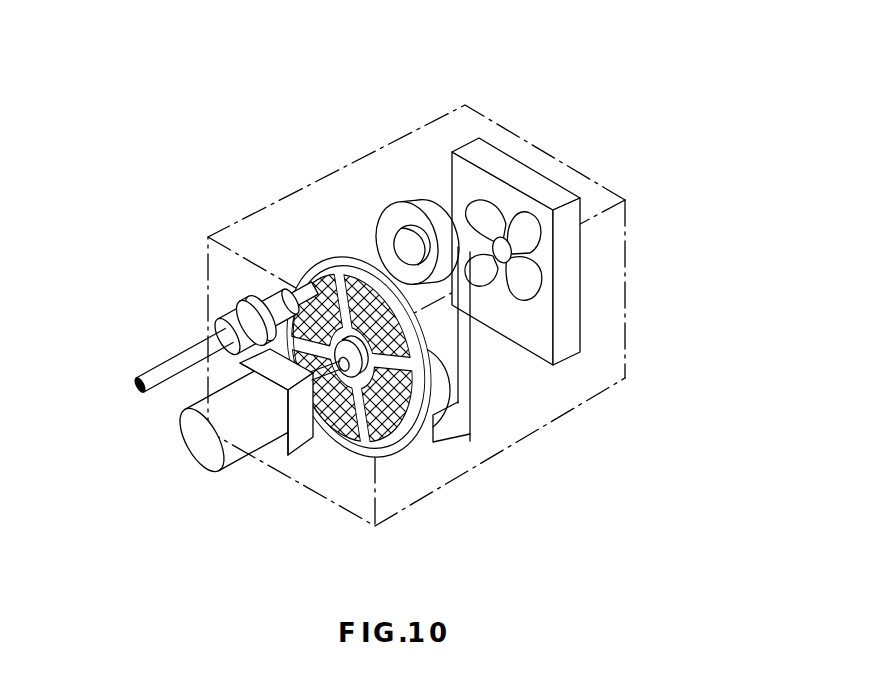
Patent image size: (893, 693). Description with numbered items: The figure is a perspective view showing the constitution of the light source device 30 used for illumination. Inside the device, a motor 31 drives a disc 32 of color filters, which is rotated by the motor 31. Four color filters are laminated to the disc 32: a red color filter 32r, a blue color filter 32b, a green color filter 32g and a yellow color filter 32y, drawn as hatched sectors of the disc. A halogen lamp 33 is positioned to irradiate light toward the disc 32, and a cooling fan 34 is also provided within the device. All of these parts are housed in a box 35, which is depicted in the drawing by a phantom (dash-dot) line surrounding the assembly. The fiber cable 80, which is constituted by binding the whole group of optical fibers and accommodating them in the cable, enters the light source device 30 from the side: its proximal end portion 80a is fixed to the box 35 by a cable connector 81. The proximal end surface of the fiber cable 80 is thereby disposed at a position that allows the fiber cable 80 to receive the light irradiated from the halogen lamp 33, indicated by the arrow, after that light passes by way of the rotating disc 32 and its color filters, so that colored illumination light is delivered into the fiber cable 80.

The light source device 30 is at (546, 136).
The motor 31 is at (193, 455).
The disc of color filters 32 is at (416, 349).
The red color filter 32r is at (453, 385).
The green color filter 32g is at (327, 447).
The blue color filter 32b is at (358, 440).
The yellow color filter 32y is at (315, 275).
The halogen lamp 33 is at (383, 210).
The cooling fan 34 is at (527, 322).
The box 35 is at (627, 322).
The fiber cable 80 is at (163, 360).
The proximal end portion 80a is at (293, 263).
The cable connector 81 is at (233, 315).